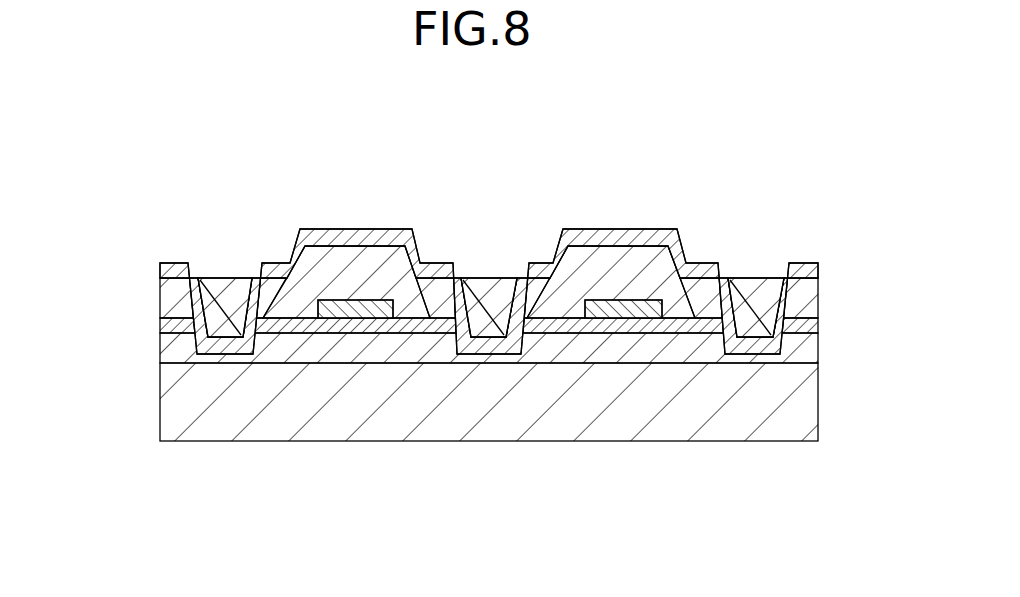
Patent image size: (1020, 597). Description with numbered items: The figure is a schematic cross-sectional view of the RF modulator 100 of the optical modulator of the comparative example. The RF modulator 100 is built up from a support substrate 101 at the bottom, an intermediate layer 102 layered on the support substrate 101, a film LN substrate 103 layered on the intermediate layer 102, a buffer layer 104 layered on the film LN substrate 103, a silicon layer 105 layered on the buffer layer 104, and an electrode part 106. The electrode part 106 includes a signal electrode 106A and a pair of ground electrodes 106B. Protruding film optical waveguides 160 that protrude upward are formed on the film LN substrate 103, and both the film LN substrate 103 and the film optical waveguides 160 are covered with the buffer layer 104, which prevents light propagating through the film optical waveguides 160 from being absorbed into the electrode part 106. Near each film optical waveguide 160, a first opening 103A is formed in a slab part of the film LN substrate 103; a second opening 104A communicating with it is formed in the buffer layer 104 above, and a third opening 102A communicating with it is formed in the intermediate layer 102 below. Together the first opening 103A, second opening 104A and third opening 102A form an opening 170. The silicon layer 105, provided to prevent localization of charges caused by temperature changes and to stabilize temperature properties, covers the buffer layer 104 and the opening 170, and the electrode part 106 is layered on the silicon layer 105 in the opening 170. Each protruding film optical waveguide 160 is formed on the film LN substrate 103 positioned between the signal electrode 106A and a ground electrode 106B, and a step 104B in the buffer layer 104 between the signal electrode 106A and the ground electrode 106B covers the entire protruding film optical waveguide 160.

The RF modulator 100 is at (806, 114).
The support substrate 101 is at (803, 402).
The intermediate layer 102 is at (805, 348).
The third opening 102A is at (201, 350).
The film LN substrate 103 is at (803, 325).
The first opening 103A is at (245, 352).
The buffer layer 104 is at (805, 300).
The second opening 104A is at (248, 321).
The step 104B is at (408, 303).
The silicon layer 105 is at (590, 229).
The electrode part 106 is at (489, 246).
The signal electrode 106A is at (488, 297).
The ground electrodes 106B is at (752, 297).
The film optical waveguides 160 is at (358, 315).
The opening 170 is at (467, 450).